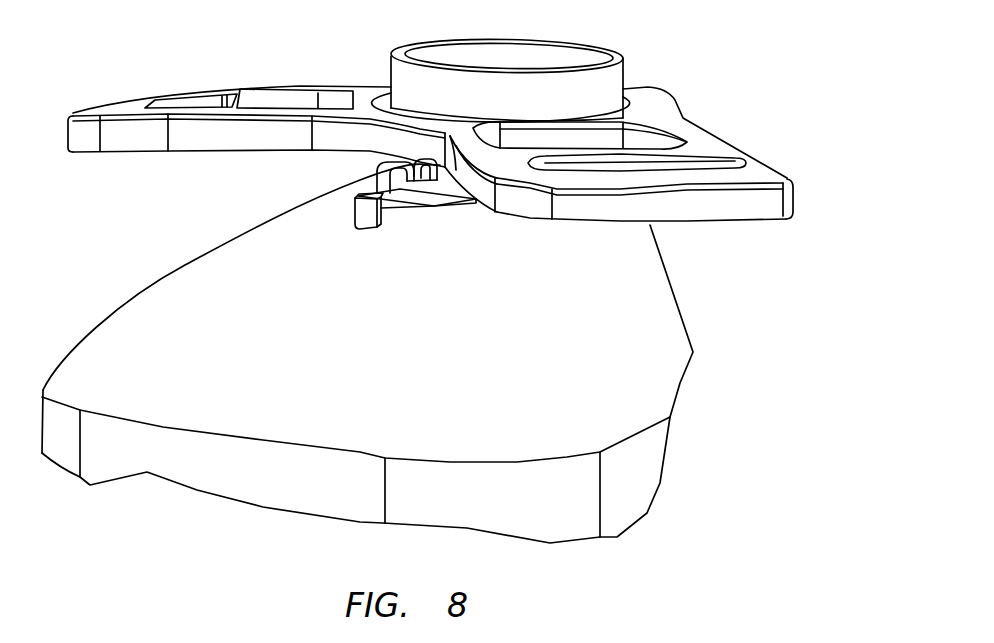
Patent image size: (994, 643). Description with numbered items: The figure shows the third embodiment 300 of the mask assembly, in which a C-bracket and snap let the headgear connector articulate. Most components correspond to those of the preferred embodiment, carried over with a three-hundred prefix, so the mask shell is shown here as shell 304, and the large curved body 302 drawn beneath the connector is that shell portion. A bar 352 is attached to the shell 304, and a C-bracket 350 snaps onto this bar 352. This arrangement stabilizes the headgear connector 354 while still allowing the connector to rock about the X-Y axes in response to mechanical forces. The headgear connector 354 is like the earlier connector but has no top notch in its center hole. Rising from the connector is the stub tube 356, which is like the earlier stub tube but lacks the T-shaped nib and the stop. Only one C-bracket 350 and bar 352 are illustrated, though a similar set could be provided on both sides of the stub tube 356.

The third embodiment 300 is at (431, 167).
The body 302 is at (427, 353).
The mask shell 304 is at (170, 297).
The C-bracket 350 is at (426, 212).
The bar 352 is at (375, 174).
The headgear connector 354 is at (127, 107).
The stub tube 356 is at (612, 80).